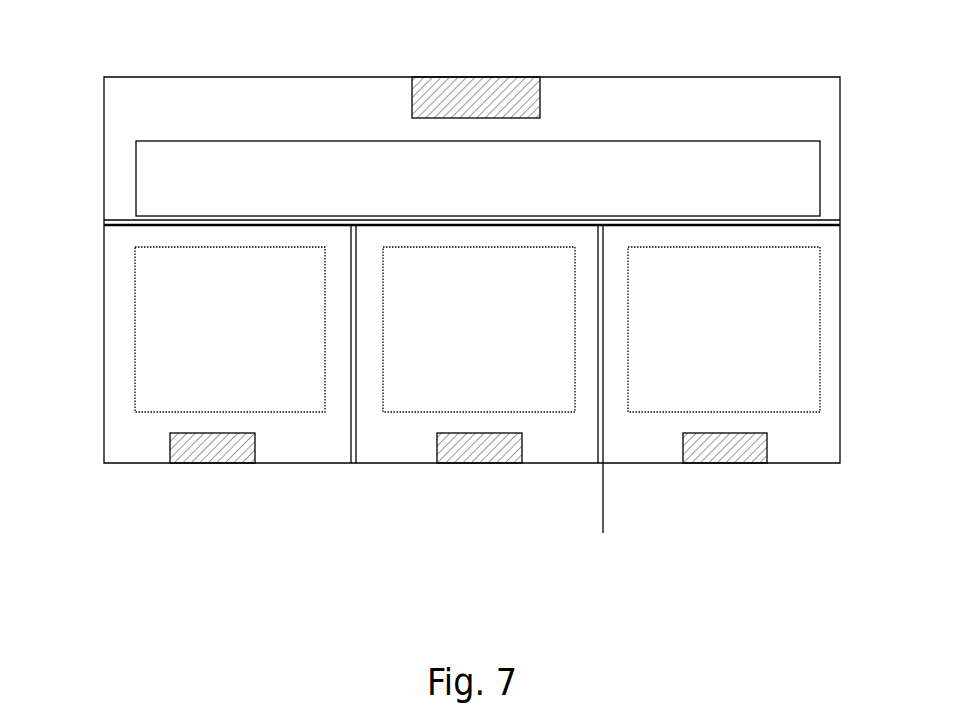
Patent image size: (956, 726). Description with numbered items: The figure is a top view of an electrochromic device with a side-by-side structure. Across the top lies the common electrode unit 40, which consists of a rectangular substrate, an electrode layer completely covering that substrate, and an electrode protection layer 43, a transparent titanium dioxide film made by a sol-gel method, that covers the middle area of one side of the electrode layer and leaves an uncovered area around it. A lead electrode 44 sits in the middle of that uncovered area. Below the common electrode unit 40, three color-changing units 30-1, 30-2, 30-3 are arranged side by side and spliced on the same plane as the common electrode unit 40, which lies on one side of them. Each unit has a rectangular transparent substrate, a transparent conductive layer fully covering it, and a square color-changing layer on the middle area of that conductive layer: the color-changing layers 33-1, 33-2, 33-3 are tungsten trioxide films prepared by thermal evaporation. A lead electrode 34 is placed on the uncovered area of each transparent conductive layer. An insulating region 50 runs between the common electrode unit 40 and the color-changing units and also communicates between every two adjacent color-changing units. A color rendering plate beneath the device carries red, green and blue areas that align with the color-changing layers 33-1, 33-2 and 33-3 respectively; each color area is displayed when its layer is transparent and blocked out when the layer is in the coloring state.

The common electrode unit 40 is at (805, 116).
The electrode protection layer 43 is at (178, 175).
The lead electrode 44 is at (465, 97).
The insulating region 50 is at (825, 222).
The color-changing layer 33-1 is at (172, 302).
The color-changing layer 33-2 is at (401, 372).
The color-changing layer 33-3 is at (785, 367).
The color-changing unit 30-1 is at (128, 434).
The color-changing unit 30-2 is at (535, 445).
The color-changing unit 30-3 is at (803, 440).
The lead electrode 34 is at (220, 448).